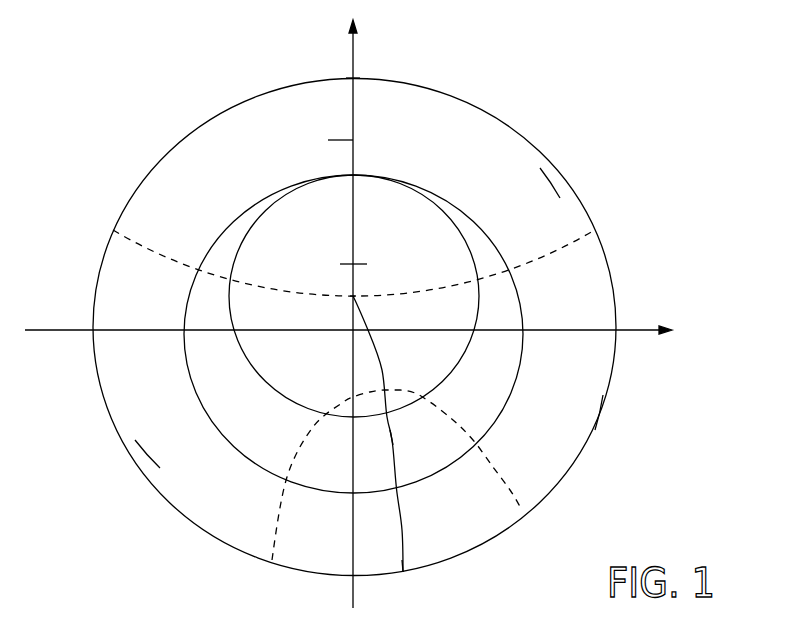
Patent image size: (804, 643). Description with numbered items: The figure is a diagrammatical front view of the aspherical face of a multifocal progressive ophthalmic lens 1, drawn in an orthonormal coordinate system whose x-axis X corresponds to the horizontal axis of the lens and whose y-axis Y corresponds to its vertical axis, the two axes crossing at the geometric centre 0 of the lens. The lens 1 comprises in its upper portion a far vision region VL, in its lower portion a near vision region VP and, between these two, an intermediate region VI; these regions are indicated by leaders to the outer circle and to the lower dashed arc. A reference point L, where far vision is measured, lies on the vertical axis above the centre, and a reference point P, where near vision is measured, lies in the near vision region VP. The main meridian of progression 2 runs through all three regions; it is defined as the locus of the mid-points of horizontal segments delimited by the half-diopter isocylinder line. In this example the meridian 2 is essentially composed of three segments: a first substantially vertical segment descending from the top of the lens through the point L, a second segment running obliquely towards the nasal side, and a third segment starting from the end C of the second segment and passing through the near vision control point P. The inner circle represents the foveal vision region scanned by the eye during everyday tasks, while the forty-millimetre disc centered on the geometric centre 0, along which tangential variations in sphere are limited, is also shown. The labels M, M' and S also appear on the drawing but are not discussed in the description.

The lens 1 is at (125, 205).
The main meridian of progression 2 is at (331, 149).
The far vision reference point L is at (355, 264).
The geometric centre 0 is at (355, 295).
The top point of outer circle M is at (370, 62).
The end point of curve M' is at (427, 581).
The far vision region VL is at (550, 182).
The intermediate region VI is at (585, 412).
The near vision region VP is at (492, 523).
The end of the second segment C is at (383, 385).
The near vision reference point P is at (392, 437).
The sphere surface S is at (148, 453).
The x-axis X is at (348, 346).
The y-axis Y is at (361, 306).